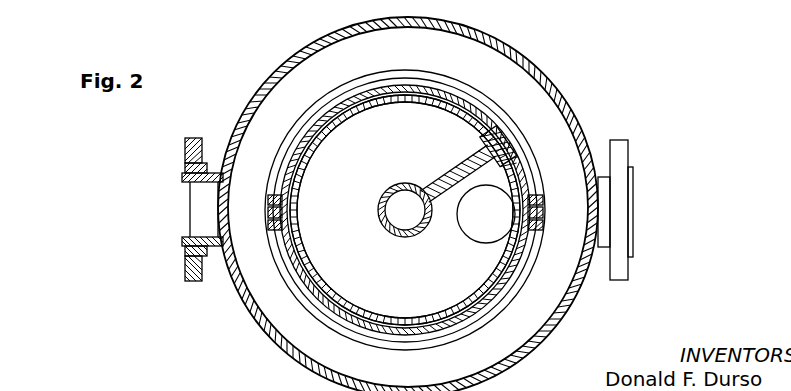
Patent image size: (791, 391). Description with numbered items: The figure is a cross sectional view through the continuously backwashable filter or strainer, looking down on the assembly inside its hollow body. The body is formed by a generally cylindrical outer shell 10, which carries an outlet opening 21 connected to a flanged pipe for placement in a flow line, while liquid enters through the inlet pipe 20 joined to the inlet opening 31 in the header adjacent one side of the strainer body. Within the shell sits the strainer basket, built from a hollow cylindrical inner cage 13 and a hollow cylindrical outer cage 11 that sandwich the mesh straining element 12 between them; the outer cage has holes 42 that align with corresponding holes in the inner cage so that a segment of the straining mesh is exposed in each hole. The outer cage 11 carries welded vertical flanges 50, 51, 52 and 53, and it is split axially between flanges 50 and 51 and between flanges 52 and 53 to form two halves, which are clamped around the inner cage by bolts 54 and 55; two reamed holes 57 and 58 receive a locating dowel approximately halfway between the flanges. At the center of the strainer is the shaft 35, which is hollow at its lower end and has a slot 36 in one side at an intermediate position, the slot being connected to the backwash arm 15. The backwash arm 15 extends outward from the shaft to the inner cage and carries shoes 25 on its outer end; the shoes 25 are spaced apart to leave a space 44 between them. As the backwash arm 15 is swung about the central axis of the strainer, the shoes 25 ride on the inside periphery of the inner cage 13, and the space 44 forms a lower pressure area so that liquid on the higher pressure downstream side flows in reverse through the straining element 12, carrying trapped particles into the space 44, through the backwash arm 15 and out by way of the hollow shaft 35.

The outer shell 10 is at (555, 90).
The outer cage 11 is at (463, 323).
The mesh straining element 12 is at (460, 310).
The inner cage 13 is at (492, 289).
The backwash arm 15 is at (431, 178).
The inlet pipe 20 is at (638, 210).
The outlet opening 21 is at (185, 210).
The shoes 25 is at (482, 148).
The inlet opening 31 is at (476, 222).
The shaft 35 is at (384, 194).
The slot 36 is at (398, 210).
The holes 42 is at (405, 210).
The space 44 is at (470, 158).
The vertical flange 50 is at (268, 199).
The vertical flange 51 is at (268, 213).
The vertical flange 52 is at (541, 200).
The vertical flange 53 is at (543, 212).
The bolt 54 is at (538, 227).
The bolt 55 is at (274, 229).
The reamed hole 57 is at (405, 96).
The reamed hole 58 is at (408, 100).